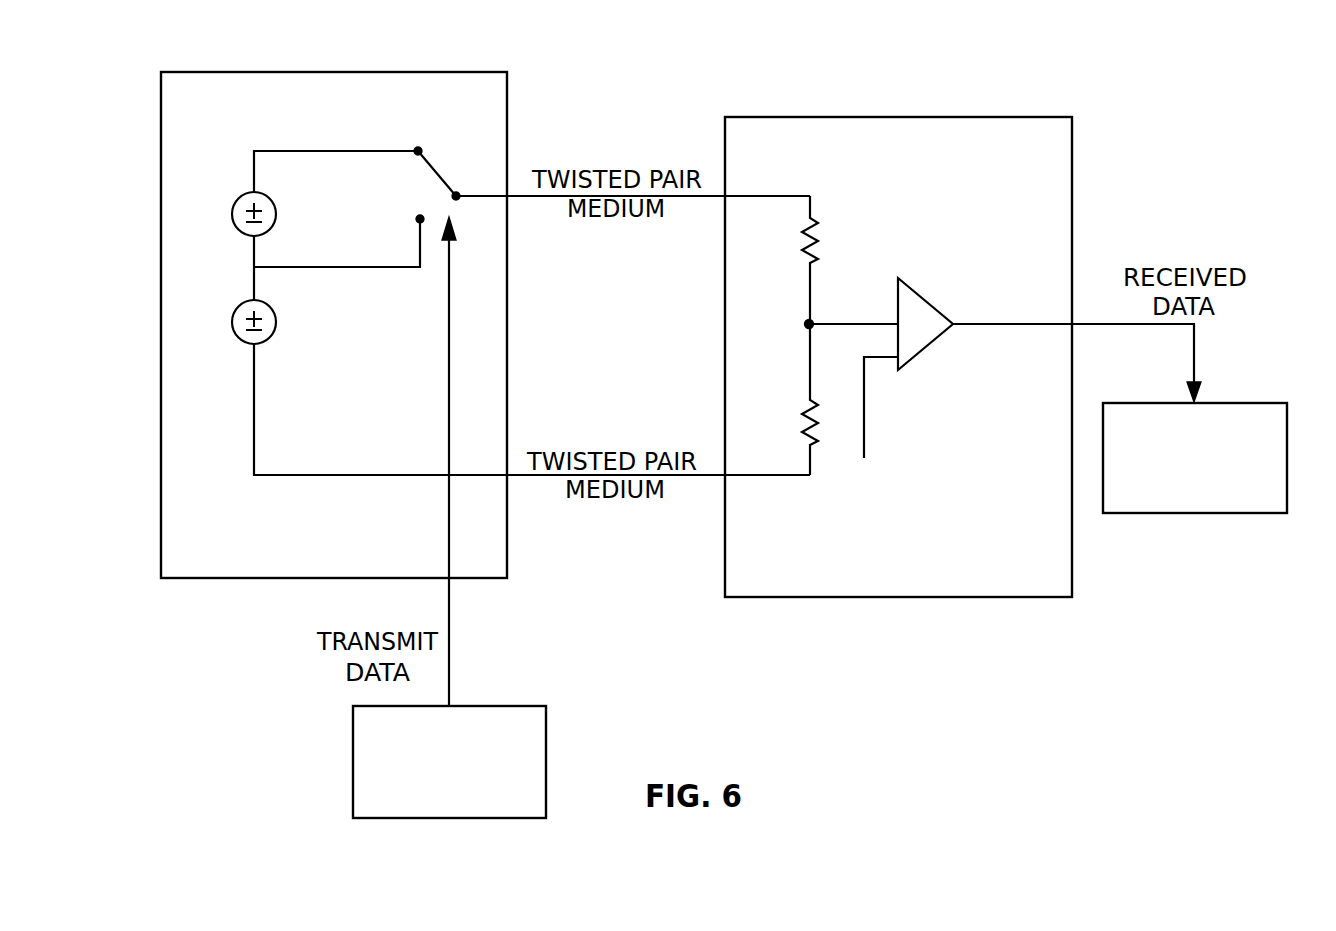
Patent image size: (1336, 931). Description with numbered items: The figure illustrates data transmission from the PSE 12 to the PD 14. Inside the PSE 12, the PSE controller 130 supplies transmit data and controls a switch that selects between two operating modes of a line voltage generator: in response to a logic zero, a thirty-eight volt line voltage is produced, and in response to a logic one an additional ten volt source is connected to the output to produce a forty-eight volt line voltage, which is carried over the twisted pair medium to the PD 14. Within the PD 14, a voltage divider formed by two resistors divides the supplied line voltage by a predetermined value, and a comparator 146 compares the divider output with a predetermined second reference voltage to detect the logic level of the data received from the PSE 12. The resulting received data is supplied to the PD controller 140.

The PSE 12 is at (334, 72).
The PD 14 is at (898, 333).
The comparator 146 is at (920, 298).
The PD controller 140 is at (1194, 513).
The PSE controller 130 is at (547, 762).